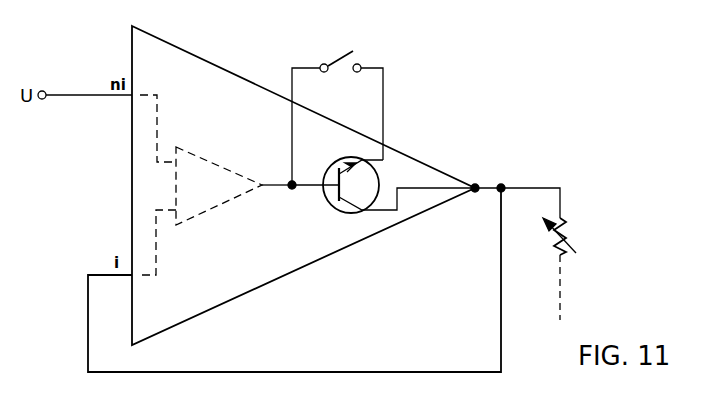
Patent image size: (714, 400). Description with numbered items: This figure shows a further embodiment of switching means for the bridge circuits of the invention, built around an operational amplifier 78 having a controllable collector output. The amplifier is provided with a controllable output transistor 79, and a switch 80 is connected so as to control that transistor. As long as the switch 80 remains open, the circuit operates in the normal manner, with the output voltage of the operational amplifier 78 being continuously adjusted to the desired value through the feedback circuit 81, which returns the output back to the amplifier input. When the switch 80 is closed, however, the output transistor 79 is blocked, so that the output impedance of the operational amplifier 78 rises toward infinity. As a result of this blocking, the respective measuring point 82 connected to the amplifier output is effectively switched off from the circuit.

The operational amplifier 78 is at (236, 73).
The output transistor 79 is at (338, 212).
The switch 80 is at (336, 55).
The feedback circuit 81 is at (330, 371).
The measuring point 82 is at (545, 240).